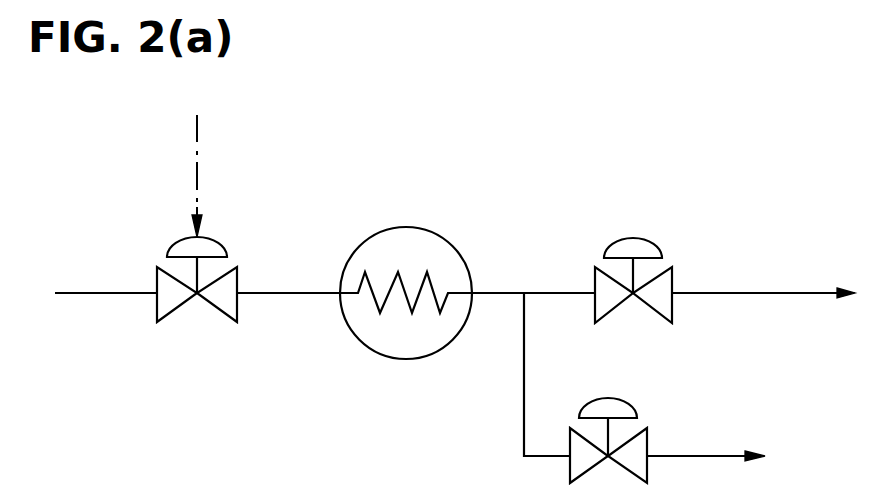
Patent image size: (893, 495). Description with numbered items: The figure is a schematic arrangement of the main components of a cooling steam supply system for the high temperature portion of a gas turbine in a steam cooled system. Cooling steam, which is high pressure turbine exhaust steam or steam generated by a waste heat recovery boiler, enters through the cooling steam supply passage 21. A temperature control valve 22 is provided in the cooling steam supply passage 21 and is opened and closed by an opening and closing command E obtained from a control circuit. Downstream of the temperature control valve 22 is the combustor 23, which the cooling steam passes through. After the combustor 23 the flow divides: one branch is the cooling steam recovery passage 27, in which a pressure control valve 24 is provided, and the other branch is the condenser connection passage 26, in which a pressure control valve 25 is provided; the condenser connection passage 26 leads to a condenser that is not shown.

The cooling steam supply passage 21 is at (78, 296).
The temperature control valve 22 is at (204, 238).
The combustor 23 is at (412, 227).
The pressure control valve 24 is at (640, 238).
The pressure control valve 25 is at (617, 398).
The condenser connection passage 26 is at (688, 455).
The cooling steam recovery passage 27 is at (722, 292).